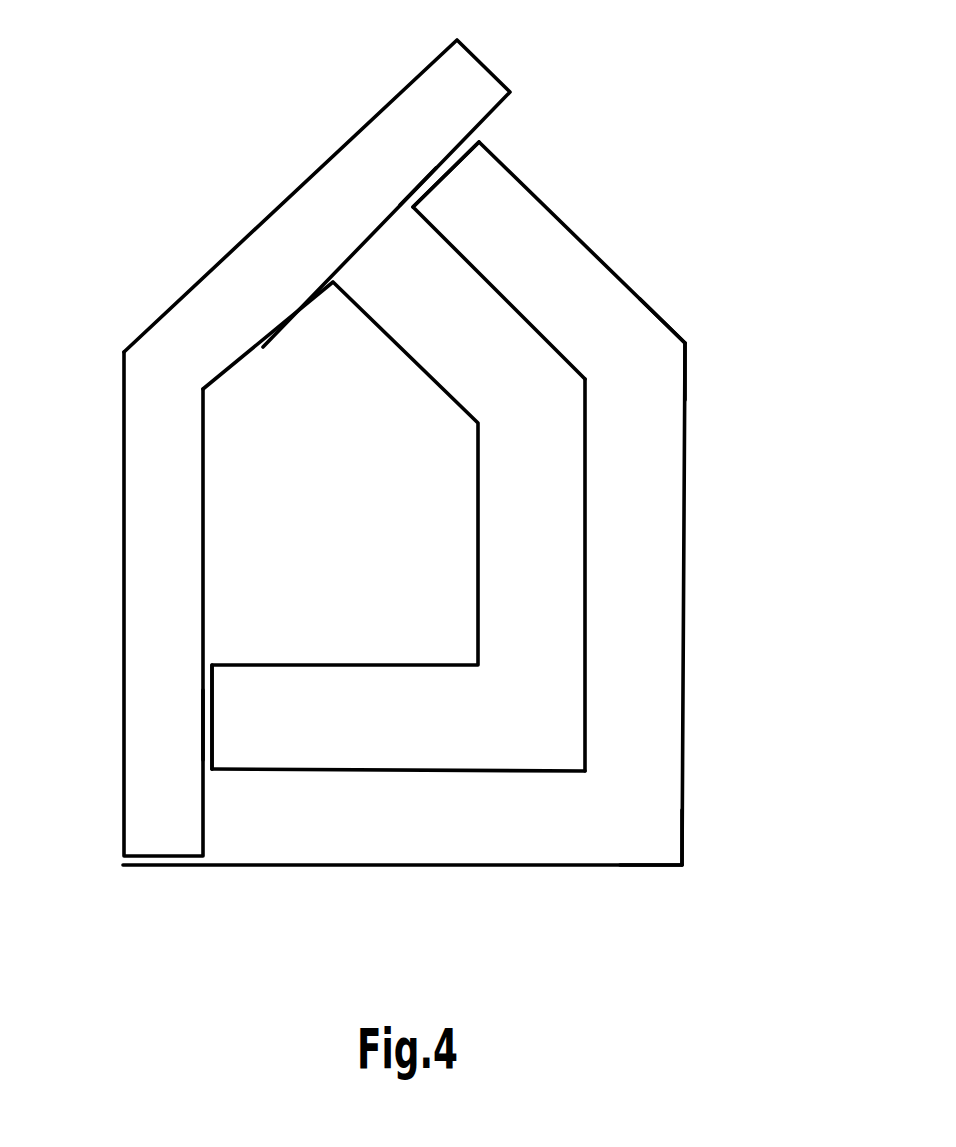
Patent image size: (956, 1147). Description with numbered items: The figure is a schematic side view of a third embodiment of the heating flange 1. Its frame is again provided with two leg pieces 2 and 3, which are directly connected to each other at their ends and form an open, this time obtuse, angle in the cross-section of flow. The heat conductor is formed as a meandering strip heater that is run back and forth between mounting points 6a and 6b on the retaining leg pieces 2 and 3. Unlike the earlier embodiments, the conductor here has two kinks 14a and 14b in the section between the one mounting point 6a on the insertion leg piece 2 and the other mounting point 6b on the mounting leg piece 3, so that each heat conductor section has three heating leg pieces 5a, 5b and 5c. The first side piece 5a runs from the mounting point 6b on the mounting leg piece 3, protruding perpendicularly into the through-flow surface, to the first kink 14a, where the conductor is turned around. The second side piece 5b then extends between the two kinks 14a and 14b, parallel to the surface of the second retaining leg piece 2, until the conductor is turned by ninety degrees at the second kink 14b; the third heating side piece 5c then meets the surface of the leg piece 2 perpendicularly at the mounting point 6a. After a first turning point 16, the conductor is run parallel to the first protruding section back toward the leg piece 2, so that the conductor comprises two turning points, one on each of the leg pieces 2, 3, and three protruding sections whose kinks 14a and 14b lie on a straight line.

The antenna 1 is at (441, 486).
The leg piece 2 is at (150, 512).
The leg piece 3 is at (316, 191).
The first heating leg piece 5a is at (533, 192).
The second heating leg piece 5b is at (683, 478).
The third heating leg piece 5c is at (425, 868).
The mounting point 6a is at (187, 732).
The mounting point 6b is at (418, 172).
The first kink 14a is at (683, 342).
The second kink 14b is at (682, 866).
The first turning point 16 is at (212, 708).